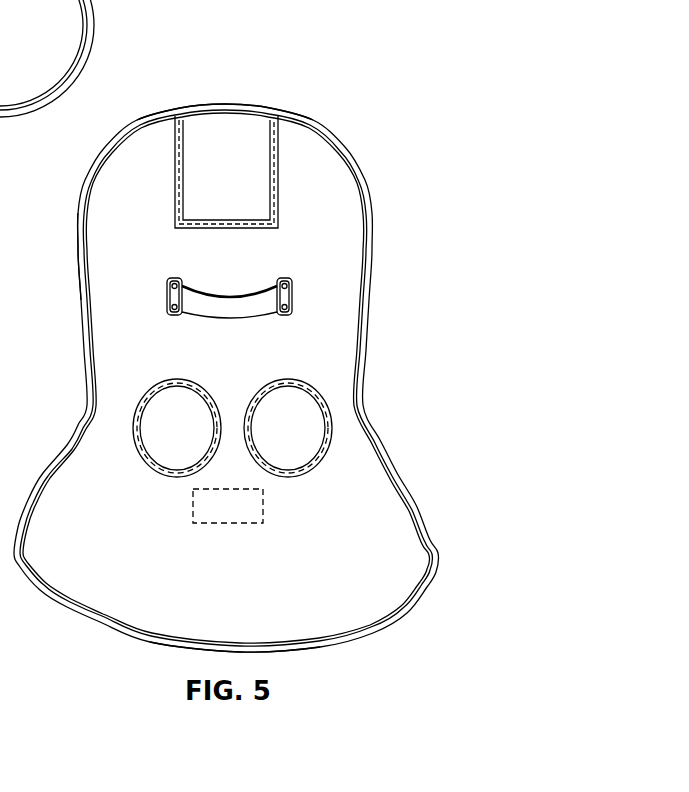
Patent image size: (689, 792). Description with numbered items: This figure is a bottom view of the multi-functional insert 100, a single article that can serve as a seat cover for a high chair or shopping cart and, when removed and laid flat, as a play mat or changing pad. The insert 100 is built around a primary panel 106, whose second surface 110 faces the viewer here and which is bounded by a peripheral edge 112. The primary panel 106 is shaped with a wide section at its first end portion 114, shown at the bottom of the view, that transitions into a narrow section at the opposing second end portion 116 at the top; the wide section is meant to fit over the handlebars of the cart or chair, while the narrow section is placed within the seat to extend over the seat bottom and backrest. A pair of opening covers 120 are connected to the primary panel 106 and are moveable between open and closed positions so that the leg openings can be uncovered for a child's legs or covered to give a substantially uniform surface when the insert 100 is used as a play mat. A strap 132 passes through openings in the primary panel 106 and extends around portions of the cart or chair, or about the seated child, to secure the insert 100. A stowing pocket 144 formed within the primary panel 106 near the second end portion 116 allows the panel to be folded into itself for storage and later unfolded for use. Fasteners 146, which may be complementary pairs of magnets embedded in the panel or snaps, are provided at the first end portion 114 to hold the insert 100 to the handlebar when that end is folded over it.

The multi-functional insert 100 is at (335, 66).
The primary panel 106 is at (320, 360).
The second surface 110 is at (247, 360).
The peripheral edge 112 is at (78, 291).
The first end portion 114 is at (374, 590).
The second end portion 116 is at (327, 153).
The opening covers 120 is at (150, 448).
The strap 132 is at (242, 288).
The stowing pocket 144 is at (233, 128).
The fasteners 146 is at (0, 28).